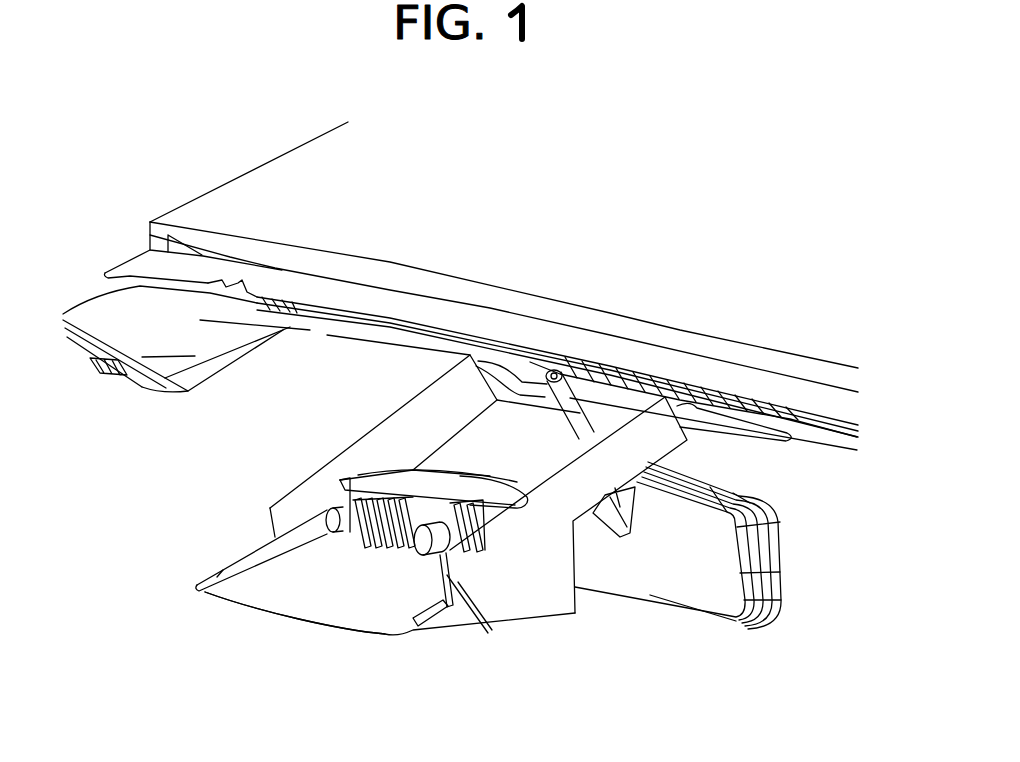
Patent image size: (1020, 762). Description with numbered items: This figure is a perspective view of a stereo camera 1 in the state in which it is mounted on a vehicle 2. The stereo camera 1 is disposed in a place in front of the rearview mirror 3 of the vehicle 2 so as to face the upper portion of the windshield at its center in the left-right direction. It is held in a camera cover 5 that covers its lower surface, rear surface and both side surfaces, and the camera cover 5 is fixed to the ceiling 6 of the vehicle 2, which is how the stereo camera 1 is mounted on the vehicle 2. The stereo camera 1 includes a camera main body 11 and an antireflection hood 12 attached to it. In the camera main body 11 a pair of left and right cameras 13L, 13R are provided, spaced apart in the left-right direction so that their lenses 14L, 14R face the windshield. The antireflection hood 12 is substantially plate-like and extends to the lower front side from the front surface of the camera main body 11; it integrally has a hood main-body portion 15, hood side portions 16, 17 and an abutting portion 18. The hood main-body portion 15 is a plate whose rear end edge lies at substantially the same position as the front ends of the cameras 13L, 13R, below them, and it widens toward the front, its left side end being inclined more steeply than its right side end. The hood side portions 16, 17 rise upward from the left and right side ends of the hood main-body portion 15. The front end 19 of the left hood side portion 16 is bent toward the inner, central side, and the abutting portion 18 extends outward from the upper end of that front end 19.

The stereo camera 1 is at (396, 518).
The vehicle 2 is at (460, 275).
The rearview mirror 3 is at (688, 587).
The camera cover 5 is at (548, 612).
The ceiling 6 is at (288, 197).
The camera main body 11 is at (498, 497).
The antireflection hood 12 is at (237, 603).
The right camera 13R is at (337, 513).
The left camera 13L is at (437, 527).
The right lens 14R is at (323, 540).
The left lens 14L is at (413, 550).
The hood main-body portion 15 is at (317, 605).
The left hood side portion 16 is at (460, 580).
The right hood side portion 17 is at (222, 573).
The abutting portion 18 is at (443, 593).
The front end of hood side portion 19 is at (427, 617).